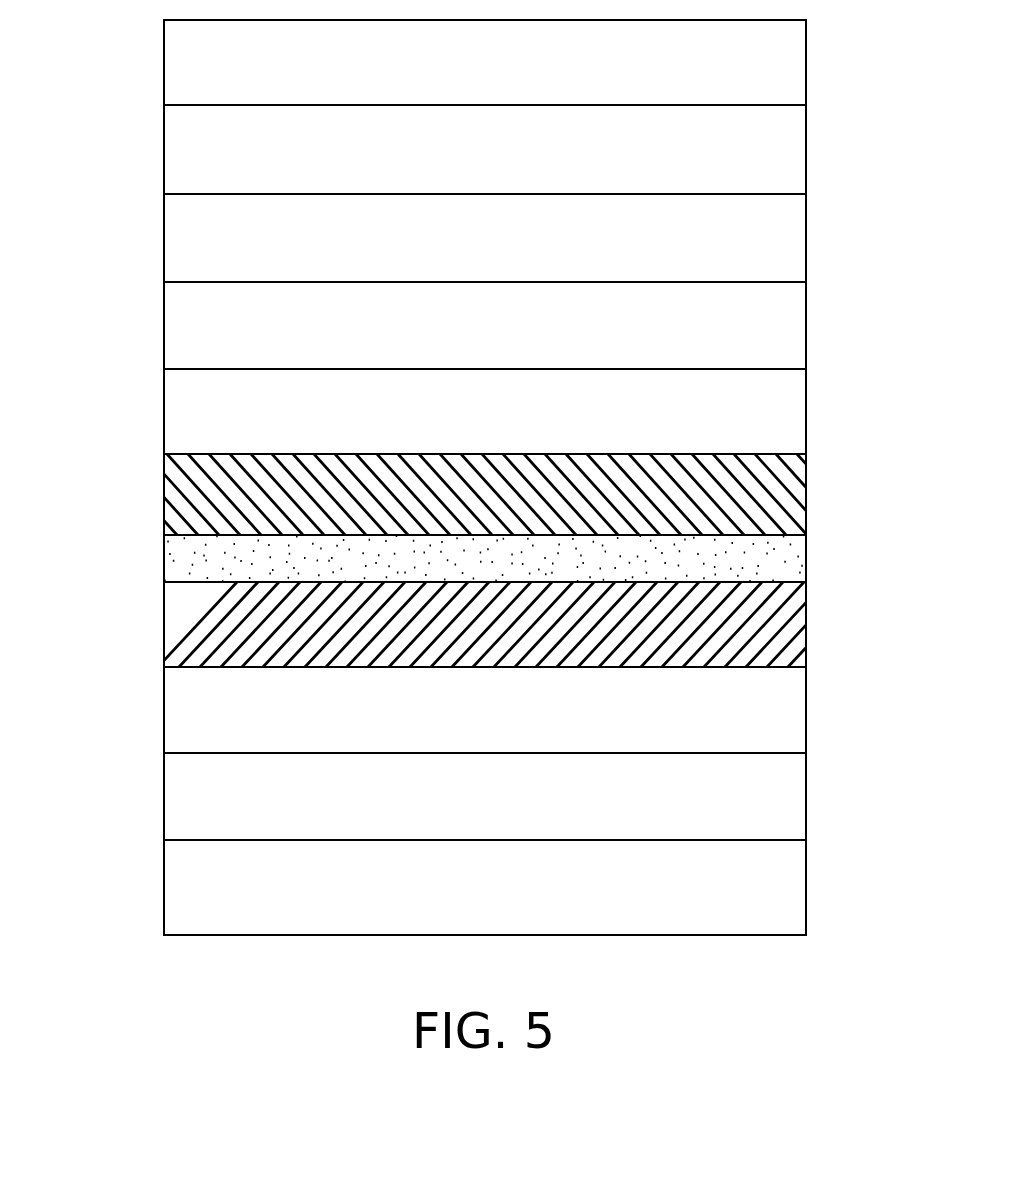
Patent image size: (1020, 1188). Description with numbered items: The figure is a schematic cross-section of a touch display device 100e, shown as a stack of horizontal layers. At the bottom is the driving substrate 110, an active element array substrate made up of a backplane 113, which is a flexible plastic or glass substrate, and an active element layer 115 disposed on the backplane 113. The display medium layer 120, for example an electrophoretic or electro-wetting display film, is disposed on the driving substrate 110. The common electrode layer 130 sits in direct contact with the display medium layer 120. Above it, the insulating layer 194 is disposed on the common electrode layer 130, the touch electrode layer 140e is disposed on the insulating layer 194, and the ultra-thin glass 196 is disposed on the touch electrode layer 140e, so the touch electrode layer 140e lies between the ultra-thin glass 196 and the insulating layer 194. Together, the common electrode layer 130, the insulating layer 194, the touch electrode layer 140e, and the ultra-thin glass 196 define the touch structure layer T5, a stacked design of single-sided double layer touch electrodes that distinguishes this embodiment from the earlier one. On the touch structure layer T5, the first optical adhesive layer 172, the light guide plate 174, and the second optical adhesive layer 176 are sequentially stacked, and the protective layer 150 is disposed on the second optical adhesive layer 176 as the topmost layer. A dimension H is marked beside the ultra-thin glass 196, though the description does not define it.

The touch display device 100e is at (913, 979).
The protective layer 150 is at (169, 61).
The second optical adhesive layer 176 is at (169, 148).
The light guide plate 174 is at (169, 242).
The first optical adhesive layer 172 is at (169, 324).
The ultra-thin glass 196 is at (169, 411).
The touch electrode layer 140e is at (169, 489).
The insulating layer 194 is at (169, 557).
The common electrode layer 130 is at (169, 619).
The display medium layer 120 is at (169, 711).
The active element layer 115 is at (169, 796).
The backplane 113 is at (169, 887).
The driving substrate 110 is at (88, 782).
The touch structure layer T5 is at (88, 400).
The height H is at (806, 369).